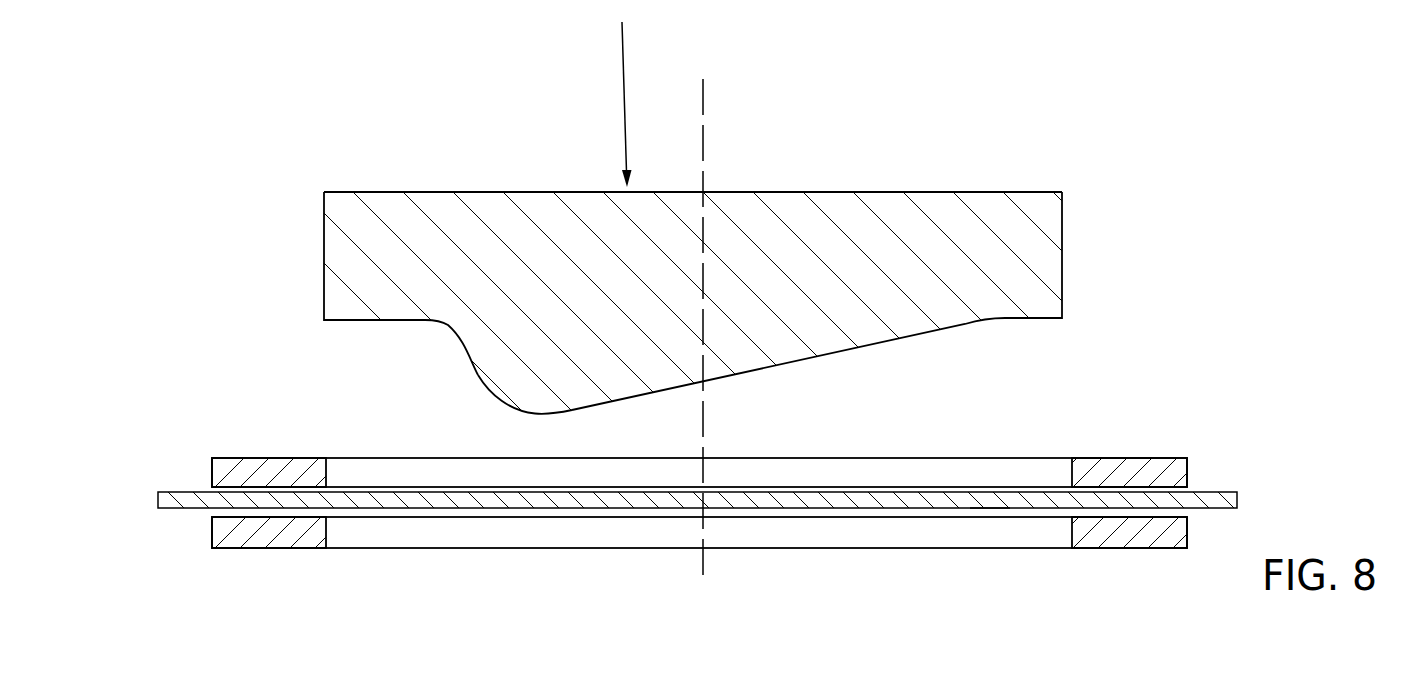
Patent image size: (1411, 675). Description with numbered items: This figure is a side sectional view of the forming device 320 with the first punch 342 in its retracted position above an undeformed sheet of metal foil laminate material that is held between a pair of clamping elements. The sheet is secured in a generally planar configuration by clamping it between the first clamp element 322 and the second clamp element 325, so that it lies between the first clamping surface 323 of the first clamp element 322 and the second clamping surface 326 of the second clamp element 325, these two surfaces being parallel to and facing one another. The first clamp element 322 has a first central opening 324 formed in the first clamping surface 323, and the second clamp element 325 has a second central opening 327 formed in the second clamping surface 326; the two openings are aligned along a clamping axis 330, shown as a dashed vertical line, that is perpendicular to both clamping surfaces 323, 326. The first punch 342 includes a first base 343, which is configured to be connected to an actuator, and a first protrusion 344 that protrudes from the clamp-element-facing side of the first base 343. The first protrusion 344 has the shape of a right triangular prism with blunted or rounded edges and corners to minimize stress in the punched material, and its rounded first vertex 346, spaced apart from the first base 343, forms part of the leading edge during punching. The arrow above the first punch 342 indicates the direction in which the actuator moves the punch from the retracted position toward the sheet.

The forming device 320 is at (330, 72).
The first clamp element 322 is at (212, 473).
The first clamping surface 323 is at (922, 506).
The first central opening 324 is at (326, 458).
The second clamp element 325 is at (242, 550).
The second clamping surface 326 is at (1001, 516).
The second central opening 327 is at (327, 536).
The clamping axis 330 is at (704, 163).
The first punch 342 is at (870, 205).
The first base 343 is at (1064, 260).
The first protrusion 344 is at (482, 366).
The first vertex 346 is at (513, 412).